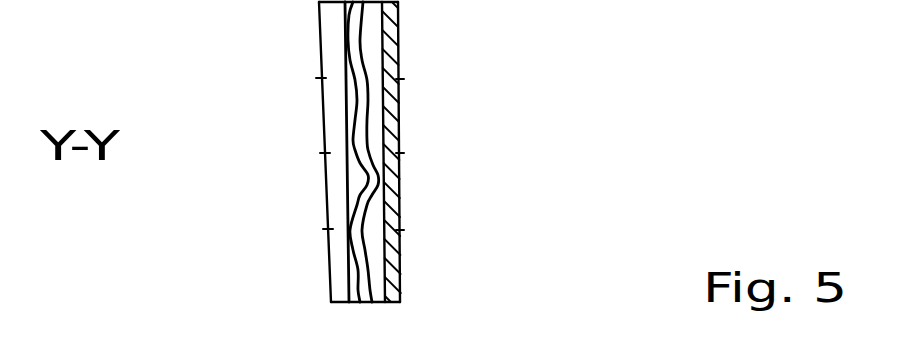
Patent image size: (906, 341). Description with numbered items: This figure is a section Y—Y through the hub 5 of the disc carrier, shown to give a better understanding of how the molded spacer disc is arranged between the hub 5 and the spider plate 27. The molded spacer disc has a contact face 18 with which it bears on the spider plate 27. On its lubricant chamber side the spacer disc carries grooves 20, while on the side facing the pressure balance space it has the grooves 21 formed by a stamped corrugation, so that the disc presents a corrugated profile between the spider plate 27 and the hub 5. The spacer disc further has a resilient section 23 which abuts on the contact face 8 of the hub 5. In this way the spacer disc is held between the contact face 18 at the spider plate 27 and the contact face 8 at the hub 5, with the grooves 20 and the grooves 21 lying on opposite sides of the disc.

The hub 5 is at (390, 52).
The contact face 8 is at (383, 222).
The contact face 18 is at (345, 267).
The grooves 20 is at (358, 152).
The grooves 21 is at (367, 97).
The resilient section 23 is at (363, 177).
The spider plate 27 is at (335, 35).